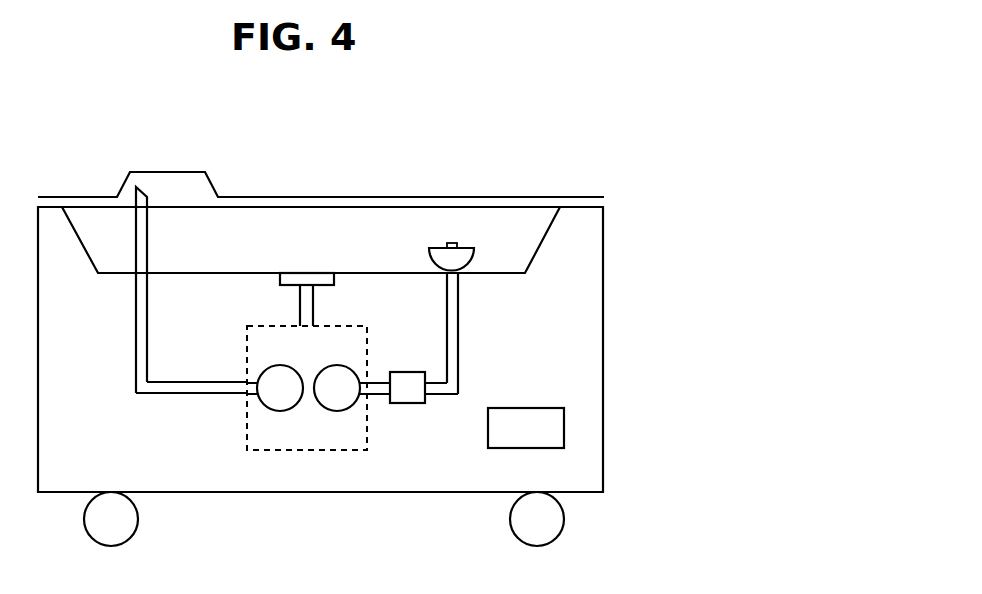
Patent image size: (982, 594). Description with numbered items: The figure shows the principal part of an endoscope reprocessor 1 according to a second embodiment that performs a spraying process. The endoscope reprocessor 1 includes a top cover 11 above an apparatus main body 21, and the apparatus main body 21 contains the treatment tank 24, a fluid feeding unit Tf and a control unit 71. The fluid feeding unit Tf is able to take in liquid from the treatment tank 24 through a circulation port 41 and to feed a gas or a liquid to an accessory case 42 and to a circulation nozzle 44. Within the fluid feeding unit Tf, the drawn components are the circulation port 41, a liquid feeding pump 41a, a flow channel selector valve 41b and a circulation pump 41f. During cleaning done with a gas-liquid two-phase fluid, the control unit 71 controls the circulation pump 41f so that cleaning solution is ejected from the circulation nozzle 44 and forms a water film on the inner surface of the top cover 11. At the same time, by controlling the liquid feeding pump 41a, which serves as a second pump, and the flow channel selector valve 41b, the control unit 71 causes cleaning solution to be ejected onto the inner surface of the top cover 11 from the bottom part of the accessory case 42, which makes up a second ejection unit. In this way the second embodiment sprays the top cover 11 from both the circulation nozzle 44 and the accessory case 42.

The endoscope reprocessor 1 is at (566, 133).
The top cover 11 is at (315, 196).
The apparatus main body 21 is at (603, 266).
The treatment tank 24 is at (392, 242).
The circulation port 41 is at (308, 272).
The liquid feeding pump 41a is at (337, 366).
The flow channel selector valve 41b is at (408, 371).
The circulation pump 41f is at (280, 366).
The accessory case 42 is at (474, 263).
The circulation nozzle 44 is at (143, 186).
The control unit 71 is at (528, 407).
The fluid feeding unit Tf is at (244, 434).